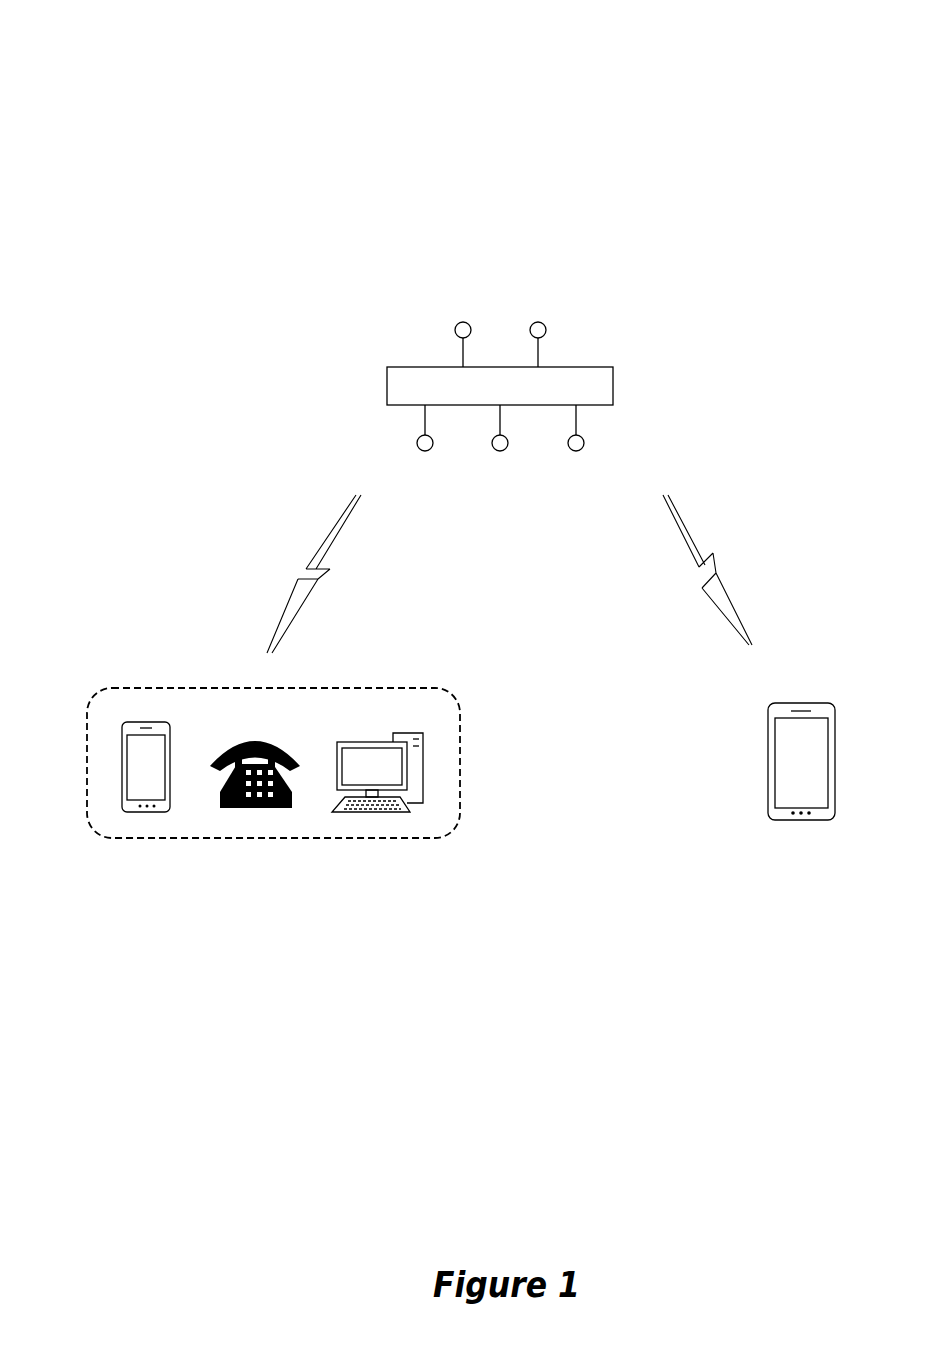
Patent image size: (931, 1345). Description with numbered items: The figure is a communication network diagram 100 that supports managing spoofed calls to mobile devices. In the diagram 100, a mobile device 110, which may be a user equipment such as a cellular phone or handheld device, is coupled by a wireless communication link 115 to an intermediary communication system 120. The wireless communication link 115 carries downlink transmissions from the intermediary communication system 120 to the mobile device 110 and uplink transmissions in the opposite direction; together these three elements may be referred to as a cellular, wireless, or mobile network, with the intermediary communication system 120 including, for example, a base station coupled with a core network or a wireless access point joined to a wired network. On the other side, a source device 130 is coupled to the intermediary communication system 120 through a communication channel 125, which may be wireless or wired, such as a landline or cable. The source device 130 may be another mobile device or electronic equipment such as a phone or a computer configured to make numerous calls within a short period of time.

The communication network diagram 100 is at (132, 87).
The mobile device 110 is at (800, 821).
The wireless communication link 115 is at (717, 569).
The intermediary communication system 120 is at (590, 366).
The communication channel 125 is at (310, 568).
The source device 130 is at (277, 840).